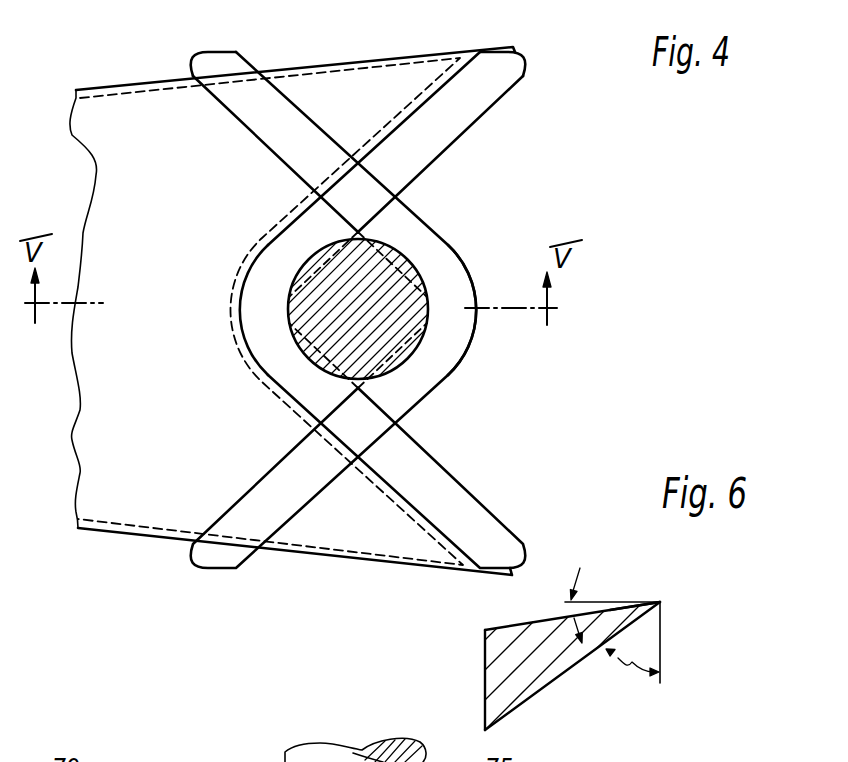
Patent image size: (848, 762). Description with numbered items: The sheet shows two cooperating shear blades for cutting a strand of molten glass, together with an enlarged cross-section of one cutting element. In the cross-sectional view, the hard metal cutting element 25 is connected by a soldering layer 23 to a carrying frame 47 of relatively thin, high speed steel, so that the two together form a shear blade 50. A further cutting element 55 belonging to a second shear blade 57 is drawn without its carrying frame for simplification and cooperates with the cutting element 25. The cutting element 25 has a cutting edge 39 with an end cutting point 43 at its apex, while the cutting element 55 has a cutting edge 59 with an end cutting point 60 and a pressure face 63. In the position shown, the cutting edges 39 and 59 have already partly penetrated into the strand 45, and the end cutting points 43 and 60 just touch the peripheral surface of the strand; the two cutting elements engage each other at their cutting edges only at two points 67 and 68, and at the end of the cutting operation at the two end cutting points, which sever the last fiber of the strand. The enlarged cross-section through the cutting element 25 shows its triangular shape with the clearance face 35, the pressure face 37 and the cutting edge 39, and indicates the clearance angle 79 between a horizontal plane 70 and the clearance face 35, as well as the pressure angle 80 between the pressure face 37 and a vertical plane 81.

In FIG. 4, the soldering layer 23 is at (432, 96).
In FIG. 4, the cutting element 25 is at (497, 104).
In FIG. 6, the cutting element 25 is at (484, 681).
In FIG. 4, the clearance face 35 is at (458, 499).
In FIG. 6, the clearance face 35 is at (485, 629).
In FIG. 6, the pressure face 37 is at (520, 705).
In FIG. 4, the cutting edge 39 is at (473, 125).
In FIG. 6, the cutting edge 39 is at (660, 602).
In FIG. 4, the end cutting point 43 is at (289, 306).
In FIG. 4, the strand 45 is at (380, 336).
In FIG. 4, the carrying frame 47 is at (100, 531).
In FIG. 4, the shear blade 50 is at (107, 73).
In FIG. 4, the cutting element 55 is at (229, 48).
In FIG. 4, the shear blade 57 is at (454, 221).
In FIG. 4, the cutting edge 59 is at (243, 124).
In FIG. 4, the end cutting point 60 is at (428, 310).
In FIG. 4, the pressure face 63 is at (285, 507).
In FIG. 4, the engagement point 67 is at (360, 230).
In FIG. 4, the engagement point 68 is at (358, 389).
In FIG. 6, the horizontal plane 70 is at (610, 602).
In FIG. 6, the clearance angle 79 is at (568, 612).
In FIG. 6, the pressure angle 80 is at (618, 658).
In FIG. 6, the vertical plane 81 is at (662, 656).